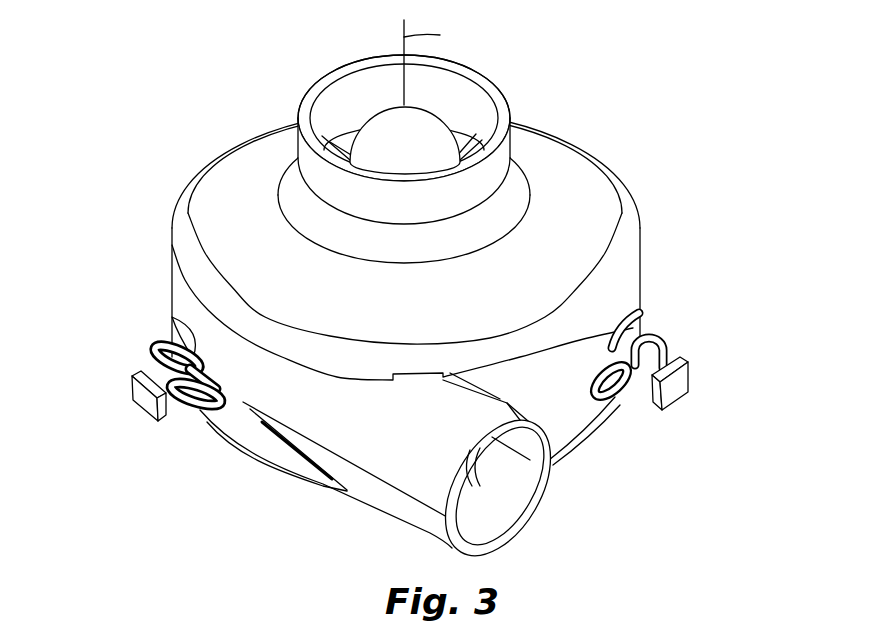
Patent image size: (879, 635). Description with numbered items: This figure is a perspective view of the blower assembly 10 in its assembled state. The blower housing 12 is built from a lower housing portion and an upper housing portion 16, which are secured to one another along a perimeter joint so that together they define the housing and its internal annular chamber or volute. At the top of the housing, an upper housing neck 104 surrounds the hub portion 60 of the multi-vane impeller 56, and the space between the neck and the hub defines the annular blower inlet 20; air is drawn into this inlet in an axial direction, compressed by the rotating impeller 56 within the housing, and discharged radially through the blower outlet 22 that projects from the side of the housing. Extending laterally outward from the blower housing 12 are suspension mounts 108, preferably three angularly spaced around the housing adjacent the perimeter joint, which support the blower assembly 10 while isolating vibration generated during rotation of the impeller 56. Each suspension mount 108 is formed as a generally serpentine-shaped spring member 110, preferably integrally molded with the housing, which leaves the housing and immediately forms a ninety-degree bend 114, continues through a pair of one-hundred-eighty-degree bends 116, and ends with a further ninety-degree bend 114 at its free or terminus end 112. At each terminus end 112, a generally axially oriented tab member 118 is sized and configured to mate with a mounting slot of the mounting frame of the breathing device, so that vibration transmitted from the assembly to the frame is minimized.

The blower assembly 10 is at (403, 302).
The blower housing 12 is at (440, 245).
The upper housing portion 16 is at (632, 293).
The blower inlet 20 is at (467, 97).
The blower outlet 22 is at (500, 527).
The impeller 56 is at (370, 133).
The hub portion 60 is at (390, 115).
The upper housing neck 104 is at (505, 162).
The suspension mount 108 is at (403, 401).
The spring member 110 is at (237, 452).
The terminus end 112 is at (420, 417).
The 90° bend 114 is at (182, 333).
The 180° bend 116 is at (153, 353).
The tab member 118 is at (143, 410).